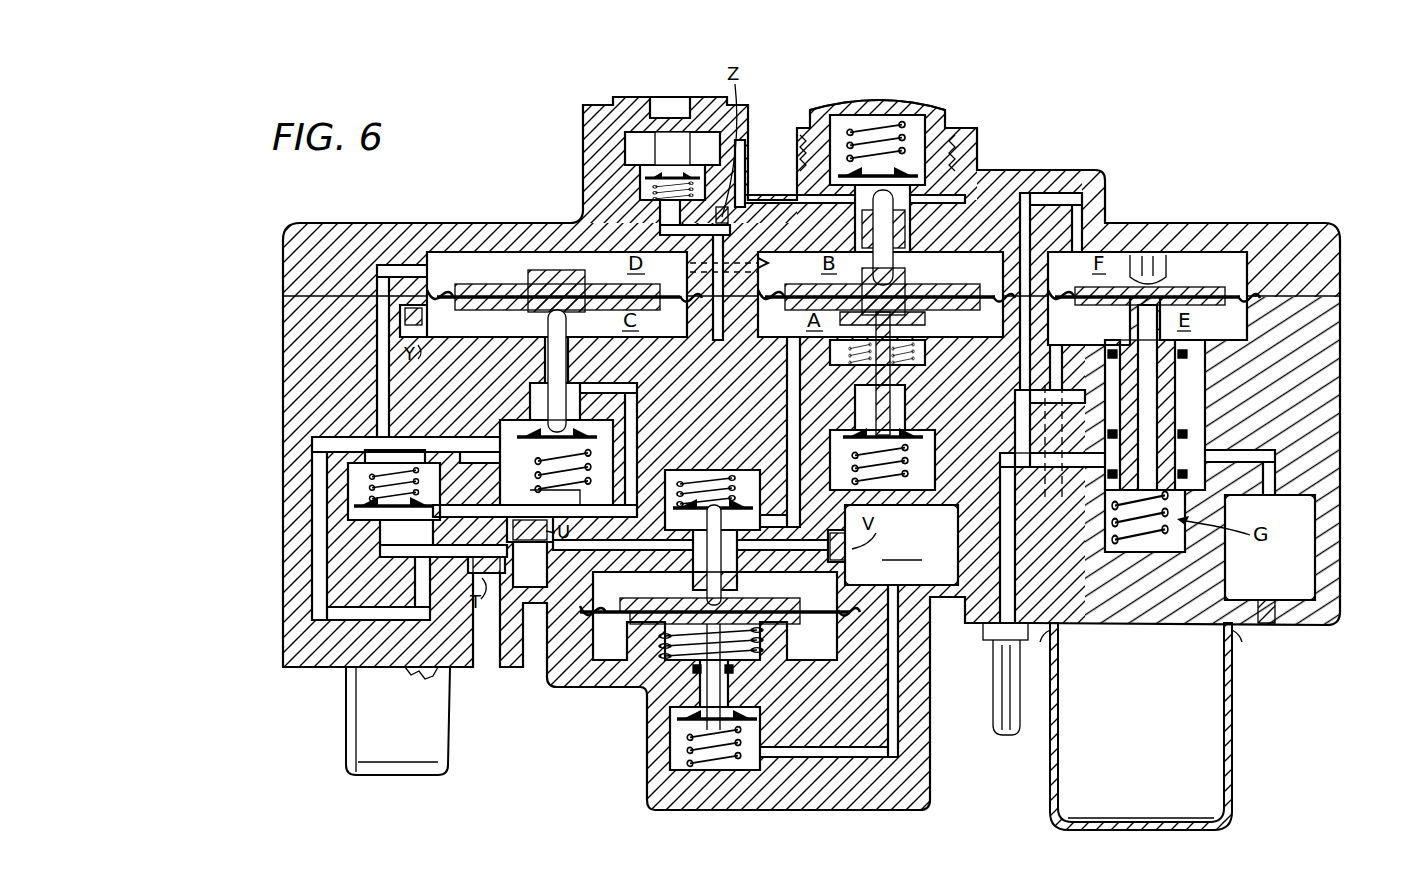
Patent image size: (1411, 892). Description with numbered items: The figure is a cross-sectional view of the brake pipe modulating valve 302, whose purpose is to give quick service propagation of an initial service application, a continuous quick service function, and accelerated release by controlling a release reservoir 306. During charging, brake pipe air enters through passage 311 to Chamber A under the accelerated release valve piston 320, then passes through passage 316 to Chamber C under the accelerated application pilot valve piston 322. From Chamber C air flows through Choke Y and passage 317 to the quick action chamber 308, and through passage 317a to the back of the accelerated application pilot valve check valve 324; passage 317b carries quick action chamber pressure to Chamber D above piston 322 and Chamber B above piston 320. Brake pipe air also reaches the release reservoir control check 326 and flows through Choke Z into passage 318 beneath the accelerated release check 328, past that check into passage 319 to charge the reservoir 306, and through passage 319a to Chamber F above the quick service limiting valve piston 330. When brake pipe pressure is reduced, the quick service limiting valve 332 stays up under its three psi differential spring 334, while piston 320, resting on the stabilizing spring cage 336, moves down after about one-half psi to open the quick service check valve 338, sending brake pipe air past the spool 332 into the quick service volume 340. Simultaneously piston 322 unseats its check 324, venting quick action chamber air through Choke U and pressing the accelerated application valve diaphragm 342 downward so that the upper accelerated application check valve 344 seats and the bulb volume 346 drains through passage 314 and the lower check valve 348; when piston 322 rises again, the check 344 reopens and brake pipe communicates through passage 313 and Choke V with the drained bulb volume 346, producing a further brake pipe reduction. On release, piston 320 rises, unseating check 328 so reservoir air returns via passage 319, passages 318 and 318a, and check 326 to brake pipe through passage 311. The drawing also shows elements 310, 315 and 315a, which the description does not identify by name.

The brake pipe modulating valve 302 is at (530, 786).
The release reservoir 306 is at (1208, 752).
The quick action chamber 308 is at (365, 722).
The diaphragm 310 is at (760, 267).
The passage 311 is at (978, 604).
The passage 313 is at (810, 545).
The passage 314 is at (895, 745).
The valve 315 is at (600, 500).
The passage 315a is at (640, 418).
The passage 316 is at (668, 212).
The passage 317 is at (380, 397).
The passage 317a is at (448, 442).
The passage 317b is at (398, 265).
The passage 318 is at (806, 207).
The passage 318a is at (752, 153).
The passage 319 is at (1002, 218).
The passage 319a is at (1080, 209).
The accelerated release valve piston 320 is at (805, 300).
The accelerated application pilot valve piston 322 is at (496, 298).
The accelerated application pilot valve check valve 324 is at (526, 445).
The release reservoir control check 326 is at (640, 180).
The accelerated release check 328 is at (903, 165).
The quick service limiting valve piston 330 is at (1180, 290).
The quick service limiting valve 332 is at (1182, 402).
The differential spring 334 is at (1147, 528).
The stabilizing spring cage 336 is at (918, 331).
The quick service check valve 338 is at (845, 441).
The quick service volume 340 is at (1302, 558).
The accelerated application valve diaphragm 342 is at (627, 615).
The upper accelerated application check valve 344 is at (742, 492).
The bulb volume 346 is at (901, 545).
The lower check valve 348 is at (685, 728).